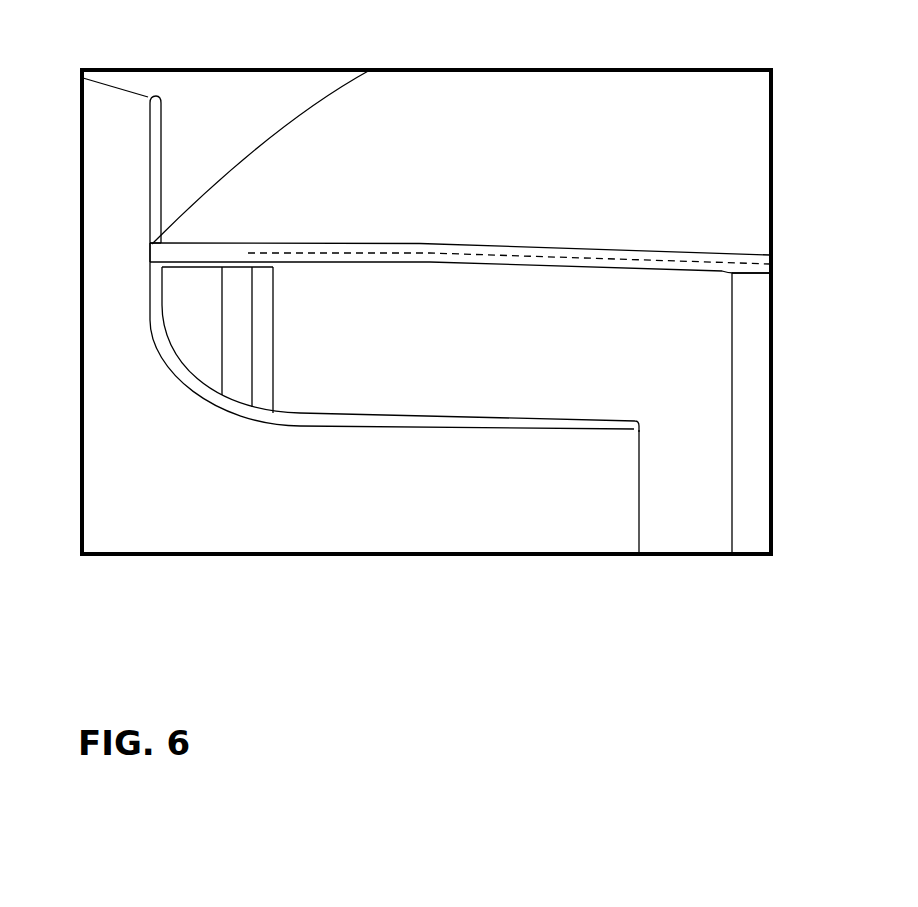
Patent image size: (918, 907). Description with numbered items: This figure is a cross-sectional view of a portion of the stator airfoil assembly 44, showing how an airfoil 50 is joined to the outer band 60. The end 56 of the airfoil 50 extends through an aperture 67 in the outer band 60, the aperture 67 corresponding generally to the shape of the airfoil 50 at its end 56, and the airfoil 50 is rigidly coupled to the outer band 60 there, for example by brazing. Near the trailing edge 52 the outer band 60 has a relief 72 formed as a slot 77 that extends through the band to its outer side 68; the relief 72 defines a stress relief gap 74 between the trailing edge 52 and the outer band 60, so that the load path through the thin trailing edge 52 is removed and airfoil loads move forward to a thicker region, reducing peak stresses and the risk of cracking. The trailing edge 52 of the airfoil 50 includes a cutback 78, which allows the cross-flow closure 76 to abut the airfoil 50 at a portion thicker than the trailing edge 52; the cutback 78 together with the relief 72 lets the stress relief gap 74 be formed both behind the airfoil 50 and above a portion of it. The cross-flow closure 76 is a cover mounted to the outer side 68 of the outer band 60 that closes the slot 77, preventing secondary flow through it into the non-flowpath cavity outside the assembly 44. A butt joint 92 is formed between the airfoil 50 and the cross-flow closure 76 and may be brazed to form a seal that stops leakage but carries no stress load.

The stator airfoil assembly 44 is at (253, 113).
The airfoil 50 is at (240, 498).
The trailing edge 52 is at (640, 497).
The end 56 is at (122, 98).
The outer band 60 is at (754, 326).
The aperture 67 is at (210, 270).
The outer side 68 is at (550, 160).
The relief 72 is at (732, 367).
The stress relief gap 74 is at (591, 327).
The cross-flow closure 76 is at (452, 184).
The slot 77 is at (697, 522).
The cutback 78 is at (380, 422).
The butt joint 92 is at (152, 245).